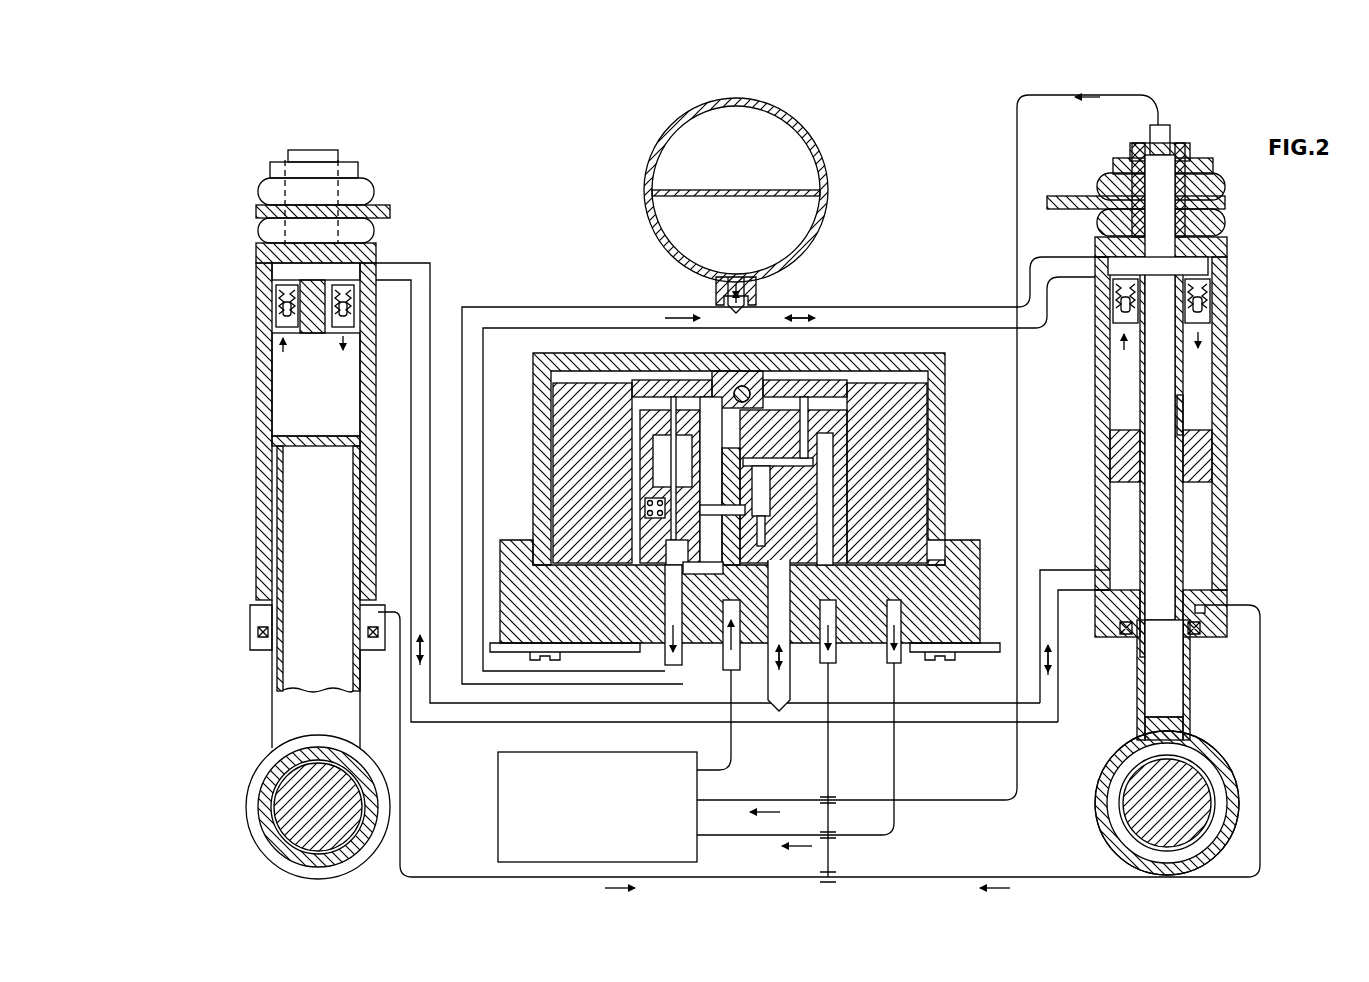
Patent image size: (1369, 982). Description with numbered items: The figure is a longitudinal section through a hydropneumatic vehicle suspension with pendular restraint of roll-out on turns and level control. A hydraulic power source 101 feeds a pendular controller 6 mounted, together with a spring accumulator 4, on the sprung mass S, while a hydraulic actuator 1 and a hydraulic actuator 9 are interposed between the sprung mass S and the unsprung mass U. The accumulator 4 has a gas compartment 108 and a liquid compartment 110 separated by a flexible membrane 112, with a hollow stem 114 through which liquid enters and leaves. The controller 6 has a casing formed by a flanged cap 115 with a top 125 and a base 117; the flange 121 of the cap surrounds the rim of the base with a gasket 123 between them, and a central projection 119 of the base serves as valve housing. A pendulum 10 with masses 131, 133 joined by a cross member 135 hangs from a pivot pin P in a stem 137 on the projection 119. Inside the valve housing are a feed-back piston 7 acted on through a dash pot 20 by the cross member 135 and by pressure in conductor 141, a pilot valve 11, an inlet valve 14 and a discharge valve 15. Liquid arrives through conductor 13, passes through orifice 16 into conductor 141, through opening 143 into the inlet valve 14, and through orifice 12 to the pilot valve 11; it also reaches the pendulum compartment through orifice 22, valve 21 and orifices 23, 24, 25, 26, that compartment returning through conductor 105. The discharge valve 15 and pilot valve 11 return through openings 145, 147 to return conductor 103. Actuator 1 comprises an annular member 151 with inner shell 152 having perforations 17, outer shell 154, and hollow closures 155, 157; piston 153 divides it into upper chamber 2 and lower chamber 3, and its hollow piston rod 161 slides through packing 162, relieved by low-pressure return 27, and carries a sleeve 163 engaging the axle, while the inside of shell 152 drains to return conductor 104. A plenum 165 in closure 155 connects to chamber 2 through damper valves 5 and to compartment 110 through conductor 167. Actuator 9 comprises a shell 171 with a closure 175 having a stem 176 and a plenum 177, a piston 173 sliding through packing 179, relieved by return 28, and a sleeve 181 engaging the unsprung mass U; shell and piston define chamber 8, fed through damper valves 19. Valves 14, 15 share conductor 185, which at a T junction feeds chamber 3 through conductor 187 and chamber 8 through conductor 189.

The hydraulic actuator 1 is at (1250, 404).
The upper chamber 2 is at (1120, 388).
The lower chamber 3 is at (1122, 522).
The spring accumulator 4 is at (845, 164).
The damper valves 5 is at (1182, 310).
The pendular controller 6 is at (969, 464).
The feed-back piston 7 is at (668, 552).
The chamber 8 is at (275, 390).
The hydraulic actuator 9 is at (246, 464).
The pendulum 10 is at (600, 479).
The pilot valve 11 is at (822, 412).
The orifice 12 is at (720, 460).
The conductor 13 is at (720, 664).
The inlet valve 14 is at (757, 462).
The discharge valve 15 is at (830, 497).
The orifice 16 is at (665, 566).
The perforations 17 is at (1178, 420).
The damper valves 19 is at (334, 332).
The dash pot 20 is at (686, 472).
The valve 21 is at (645, 508).
The orifice 22 is at (710, 514).
The orifice 23 is at (705, 448).
The orifice 24 is at (652, 436).
The orifice 25 is at (745, 448).
The orifice 26 is at (652, 480).
The low-pressure return 27 is at (1240, 612).
The low-pressure return 28 is at (383, 608).
The hydraulic power source 101 is at (610, 839).
The return conductor 103 is at (836, 662).
The return conductor 104 is at (1160, 112).
The return conductor 105 is at (896, 662).
The compartment 108 is at (672, 140).
The compartment 110 is at (800, 225).
The flexible membrane 112 is at (743, 193).
The hollow stem 114 is at (754, 290).
The flanged cap 115 is at (985, 414).
The base 117 is at (975, 612).
The projection 119 is at (830, 422).
The flange 121 is at (965, 537).
The gasket 123 is at (950, 563).
The top 125 is at (940, 355).
The mass 131 is at (555, 512).
The mass 133 is at (924, 508).
The cross member 135 is at (820, 376).
The stem 137 is at (730, 380).
The conductor 141 is at (628, 676).
The opening 143 is at (722, 568).
The opening 145 is at (822, 522).
The opening 147 is at (838, 445).
The annular member 151 is at (1232, 340).
The inner shell 152 is at (1108, 358).
The piston 153 is at (1120, 462).
The outer shell 154 is at (1222, 462).
The closure 155 is at (1215, 248).
The closure 157 is at (1215, 600).
The piston rod 161 is at (1190, 680).
The packing 162 is at (1130, 636).
The sleeve 163 is at (1212, 768).
The plenum 165 is at (1200, 262).
The conductor 167 is at (950, 308).
The shell 171 is at (260, 368).
The piston 173 is at (326, 438).
The closure 175 is at (258, 262).
The stem 176 is at (325, 158).
The plenum 177 is at (352, 270).
The packing 179 is at (268, 648).
The sleeve 181 is at (262, 770).
The conductor 185 is at (780, 688).
The conductor 187 is at (1042, 580).
The conductor 189 is at (420, 292).
The pivot pin P is at (748, 386).
The sprung mass S is at (392, 212).
The unsprung mass U is at (327, 815).